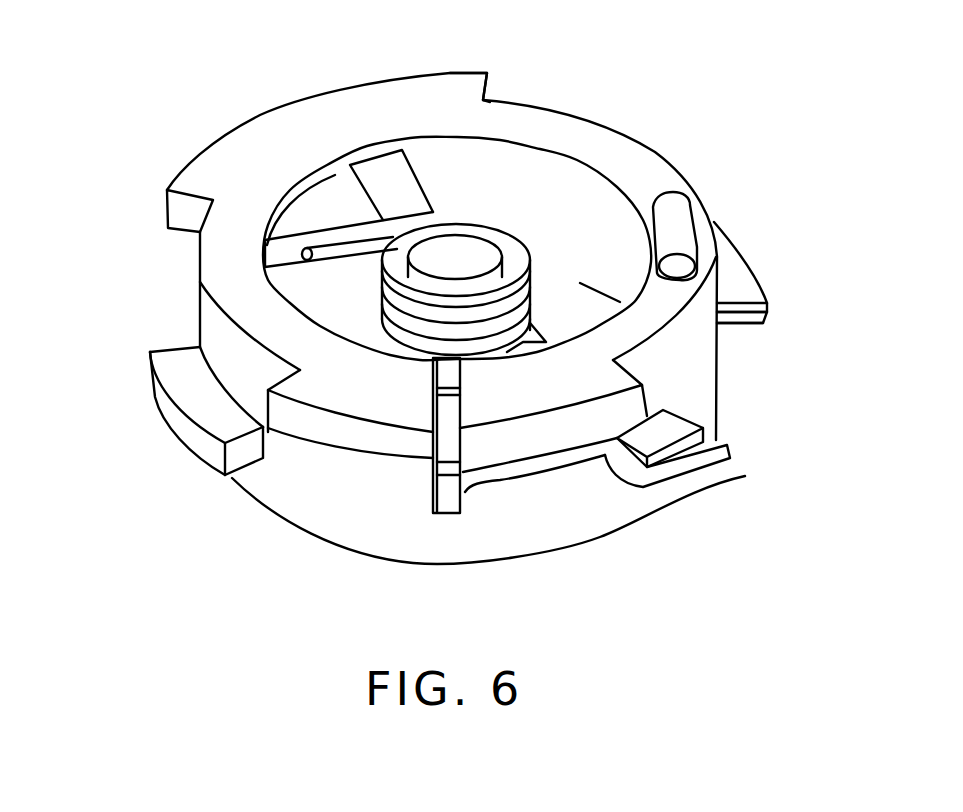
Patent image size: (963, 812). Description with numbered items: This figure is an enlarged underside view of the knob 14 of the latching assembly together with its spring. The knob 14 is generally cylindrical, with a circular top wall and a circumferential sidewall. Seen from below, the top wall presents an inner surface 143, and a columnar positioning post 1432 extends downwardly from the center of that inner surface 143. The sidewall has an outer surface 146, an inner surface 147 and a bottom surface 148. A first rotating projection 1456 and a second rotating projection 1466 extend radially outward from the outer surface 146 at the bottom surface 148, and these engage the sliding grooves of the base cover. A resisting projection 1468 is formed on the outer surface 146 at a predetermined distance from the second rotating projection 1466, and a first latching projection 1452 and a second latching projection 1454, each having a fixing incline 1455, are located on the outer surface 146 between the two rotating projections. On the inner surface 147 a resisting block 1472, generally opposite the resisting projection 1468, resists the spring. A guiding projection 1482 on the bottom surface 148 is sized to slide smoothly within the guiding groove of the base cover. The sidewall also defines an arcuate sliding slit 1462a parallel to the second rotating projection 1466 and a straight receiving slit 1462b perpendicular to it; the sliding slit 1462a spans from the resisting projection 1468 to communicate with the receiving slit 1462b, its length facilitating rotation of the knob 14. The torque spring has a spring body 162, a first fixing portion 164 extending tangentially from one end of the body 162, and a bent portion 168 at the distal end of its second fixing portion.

The knob 14 is at (382, 70).
The positioning post 1432 is at (450, 255).
The spring body 162 is at (398, 250).
The first fixing portion 164 is at (312, 252).
The resisting block 1472 is at (328, 290).
The first latching projection 1452 is at (188, 380).
The fixing incline 1455 is at (743, 320).
The first rotating projection 1456 is at (453, 88).
The bottom surface 148 is at (517, 123).
The inner surface 147 is at (553, 188).
The inner surface 143 is at (566, 300).
The guiding projection 1482 is at (677, 222).
The second latching projection 1454 is at (733, 287).
The resisting projection 1468 is at (675, 433).
The bent portion 168 is at (697, 463).
The outer surface 146 is at (290, 463).
The second rotating projection 1466 is at (387, 435).
The receiving slit 1462b is at (432, 450).
The sliding slit 1462a is at (538, 470).